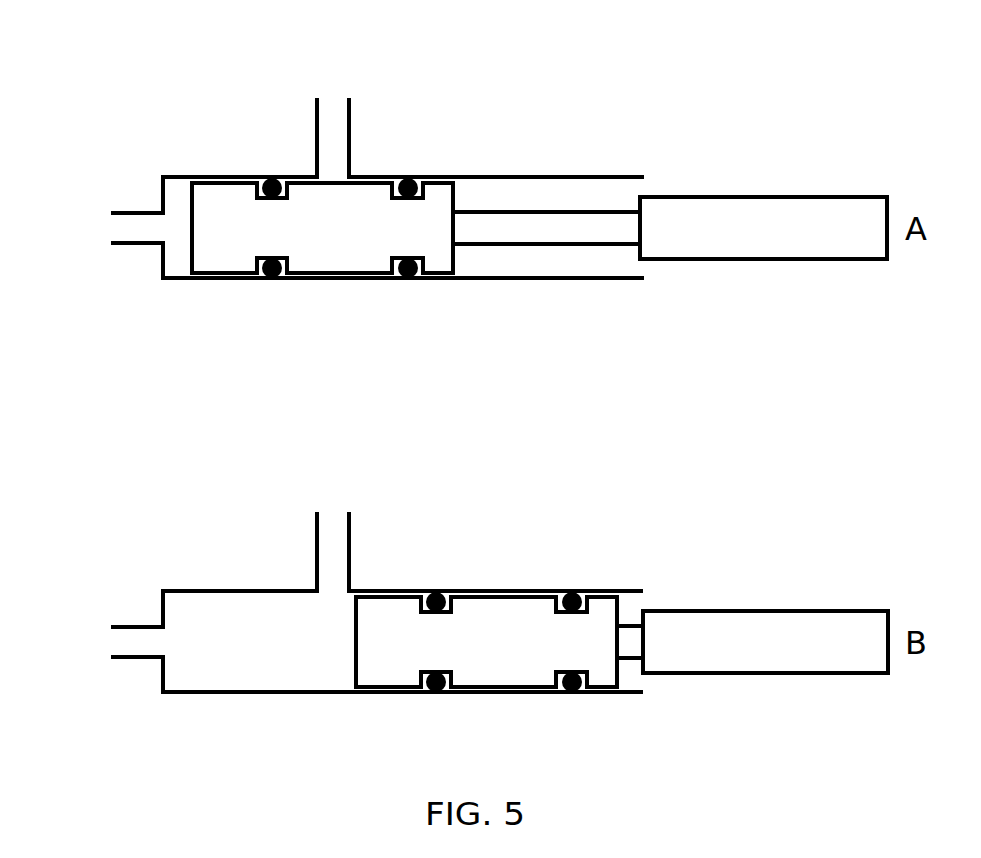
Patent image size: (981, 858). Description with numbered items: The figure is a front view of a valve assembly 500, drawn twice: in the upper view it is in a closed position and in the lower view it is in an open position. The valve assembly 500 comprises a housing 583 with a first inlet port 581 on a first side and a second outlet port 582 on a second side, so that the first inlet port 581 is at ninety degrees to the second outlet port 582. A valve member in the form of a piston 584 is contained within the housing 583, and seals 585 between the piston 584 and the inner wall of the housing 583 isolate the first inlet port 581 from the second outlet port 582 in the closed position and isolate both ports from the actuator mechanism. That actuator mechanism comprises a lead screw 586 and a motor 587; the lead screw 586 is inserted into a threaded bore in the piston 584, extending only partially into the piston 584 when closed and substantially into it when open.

The valve assembly 500 is at (743, 84).
The first inlet port 581 is at (120, 229).
The second outlet port 582 is at (333, 107).
The housing 583 is at (177, 175).
The piston 584 is at (335, 257).
The seals 585 is at (408, 177).
The lead screw 586 is at (558, 225).
The motor 587 is at (760, 228).